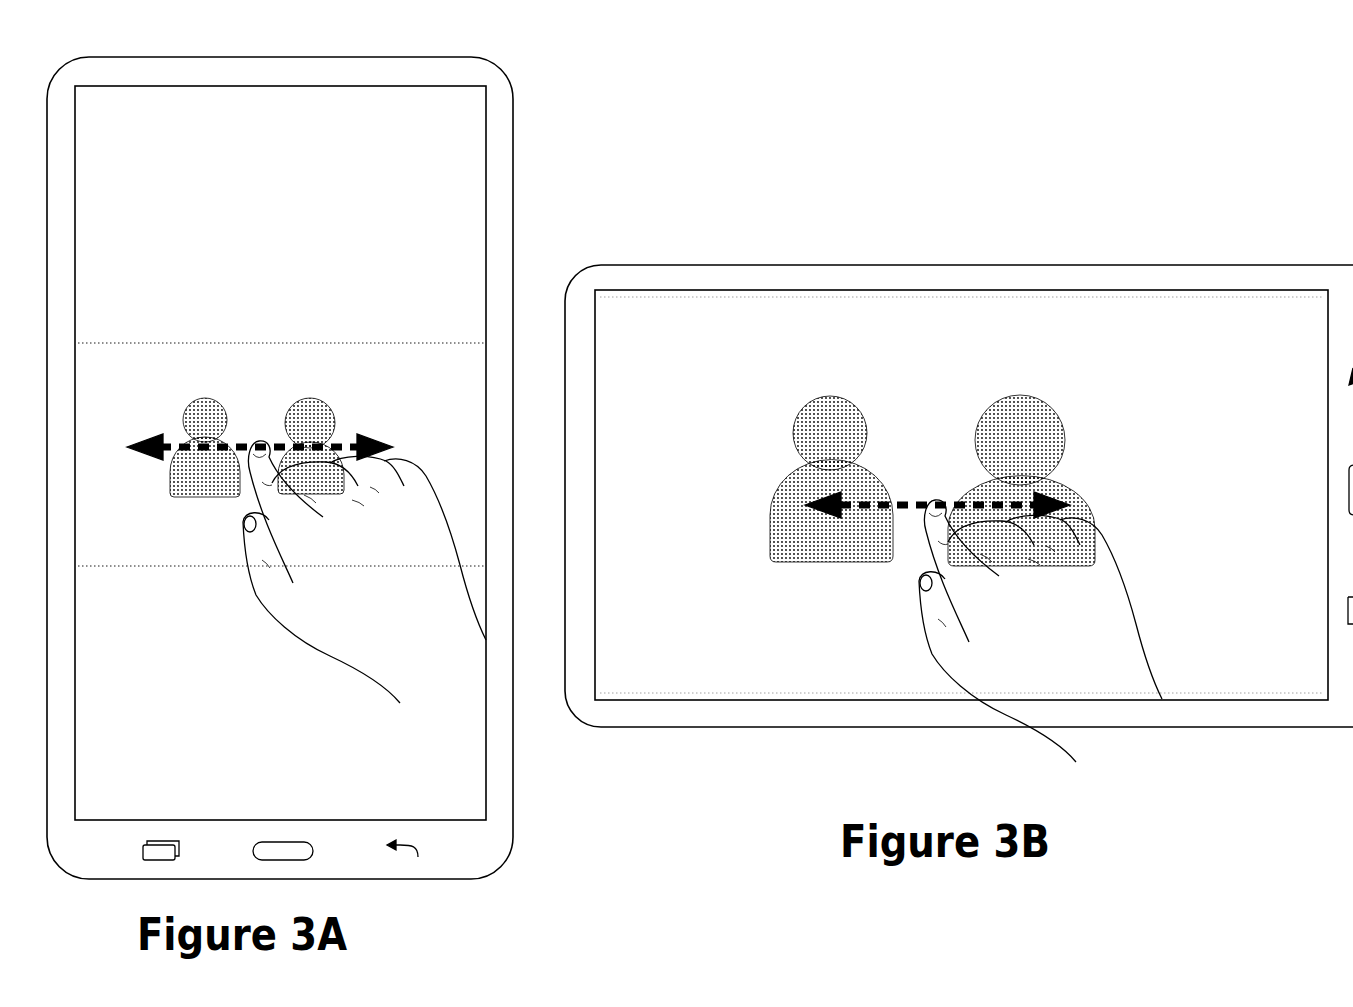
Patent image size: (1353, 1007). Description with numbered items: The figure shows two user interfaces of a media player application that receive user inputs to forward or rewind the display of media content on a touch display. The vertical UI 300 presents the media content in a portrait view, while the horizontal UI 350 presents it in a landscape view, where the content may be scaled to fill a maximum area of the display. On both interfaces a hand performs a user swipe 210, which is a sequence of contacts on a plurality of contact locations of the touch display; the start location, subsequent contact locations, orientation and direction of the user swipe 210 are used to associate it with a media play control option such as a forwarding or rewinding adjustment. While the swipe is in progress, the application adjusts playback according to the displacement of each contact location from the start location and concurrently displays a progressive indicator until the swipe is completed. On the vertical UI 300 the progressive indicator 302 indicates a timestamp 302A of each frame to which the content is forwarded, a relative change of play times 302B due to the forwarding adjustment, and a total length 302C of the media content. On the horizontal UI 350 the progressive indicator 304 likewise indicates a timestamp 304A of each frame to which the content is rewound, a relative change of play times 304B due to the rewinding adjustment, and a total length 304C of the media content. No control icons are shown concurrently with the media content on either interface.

In FIG. 3A, the vertical UI 300 is at (540, 108).
In FIG. 3A, the progressive indicator 302 is at (275, 287).
In FIG. 3A, the timestamp 302A is at (160, 336).
In FIG. 3A, the relative change of play times 302B is at (330, 379).
In FIG. 3A, the total length 302C is at (355, 333).
In FIG. 3A, the user swipe 210 is at (337, 433).
In FIG. 3B, the user swipe 210 is at (1008, 500).
In FIG. 3B, the horizontal UI 350 is at (1221, 108).
In FIG. 3B, the progressive indicator 304 is at (945, 364).
In FIG. 3B, the timestamp 304A is at (840, 395).
In FIG. 3B, the relative change of play times 304B is at (1003, 444).
In FIG. 3B, the total length 304C is at (1040, 405).